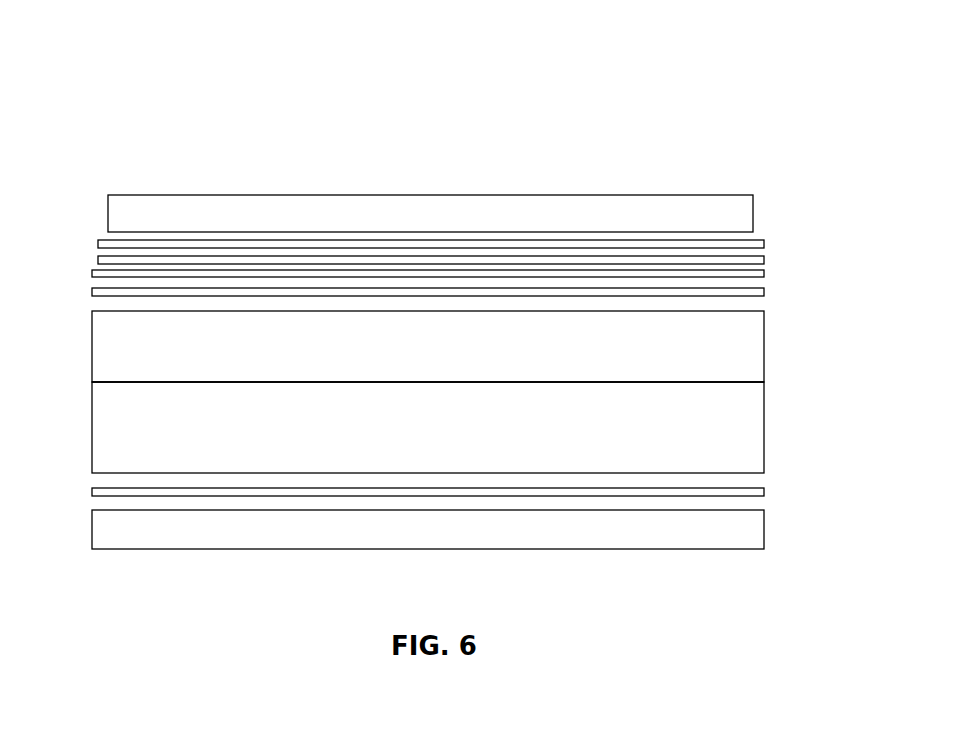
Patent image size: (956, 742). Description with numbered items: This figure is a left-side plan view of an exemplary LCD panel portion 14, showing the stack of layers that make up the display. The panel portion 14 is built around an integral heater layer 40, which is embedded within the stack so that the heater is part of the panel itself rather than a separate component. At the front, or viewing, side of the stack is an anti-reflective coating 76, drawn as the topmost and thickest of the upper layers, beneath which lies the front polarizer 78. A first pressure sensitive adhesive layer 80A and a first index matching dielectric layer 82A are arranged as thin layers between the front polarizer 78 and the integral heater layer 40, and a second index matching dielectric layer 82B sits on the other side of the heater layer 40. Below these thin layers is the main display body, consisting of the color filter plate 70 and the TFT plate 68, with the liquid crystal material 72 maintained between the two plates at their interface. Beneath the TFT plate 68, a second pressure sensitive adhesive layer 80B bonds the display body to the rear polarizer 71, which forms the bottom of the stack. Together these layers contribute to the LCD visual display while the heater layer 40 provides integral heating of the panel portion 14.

The panel portion 14 is at (280, 116).
The anti-reflective coating 76 is at (740, 193).
The front polarizer 78 is at (133, 209).
The first pressure sensitive adhesive layer 80A is at (764, 249).
The first index matching dielectric layer 82A is at (756, 257).
The integral heater layer 40 is at (764, 273).
The second index matching dielectric layer 82B is at (764, 292).
The color filter plate 70 is at (752, 345).
The TFT plate 68 is at (752, 415).
The liquid crystal material 72 is at (117, 382).
The second pressure sensitive adhesive layer 80B is at (764, 490).
The rear polarizer 71 is at (752, 531).